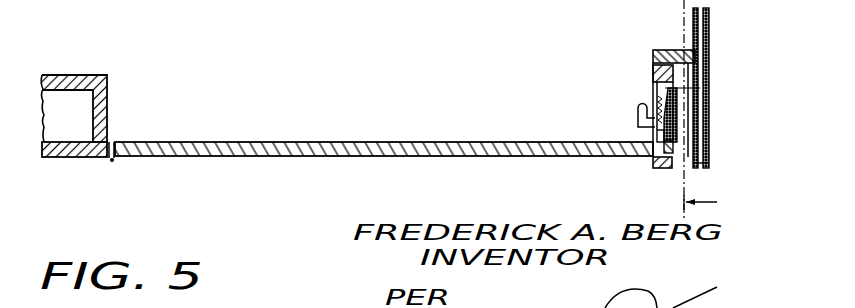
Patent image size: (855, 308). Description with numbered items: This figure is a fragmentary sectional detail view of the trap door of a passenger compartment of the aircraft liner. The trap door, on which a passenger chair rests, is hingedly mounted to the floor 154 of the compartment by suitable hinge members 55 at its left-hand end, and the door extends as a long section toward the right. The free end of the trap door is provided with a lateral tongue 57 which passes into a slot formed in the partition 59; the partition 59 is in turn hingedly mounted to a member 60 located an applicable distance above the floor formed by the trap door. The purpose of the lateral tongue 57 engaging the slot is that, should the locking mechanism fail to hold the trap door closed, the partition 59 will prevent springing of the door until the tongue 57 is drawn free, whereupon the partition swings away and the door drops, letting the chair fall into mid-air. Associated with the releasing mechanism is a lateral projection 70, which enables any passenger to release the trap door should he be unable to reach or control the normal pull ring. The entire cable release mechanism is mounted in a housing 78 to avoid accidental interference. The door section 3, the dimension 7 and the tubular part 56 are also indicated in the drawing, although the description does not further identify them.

The bar 3 is at (273, 142).
The dimension 7 is at (688, 202).
The hinge member 55 is at (113, 162).
The tube 56 is at (699, 7).
The lateral tongue 57 is at (677, 146).
The partition 59 is at (652, 72).
The member 60 is at (665, 50).
The lateral projection 70 is at (638, 108).
The housing 78 is at (107, 102).
The floor 154 is at (67, 153).